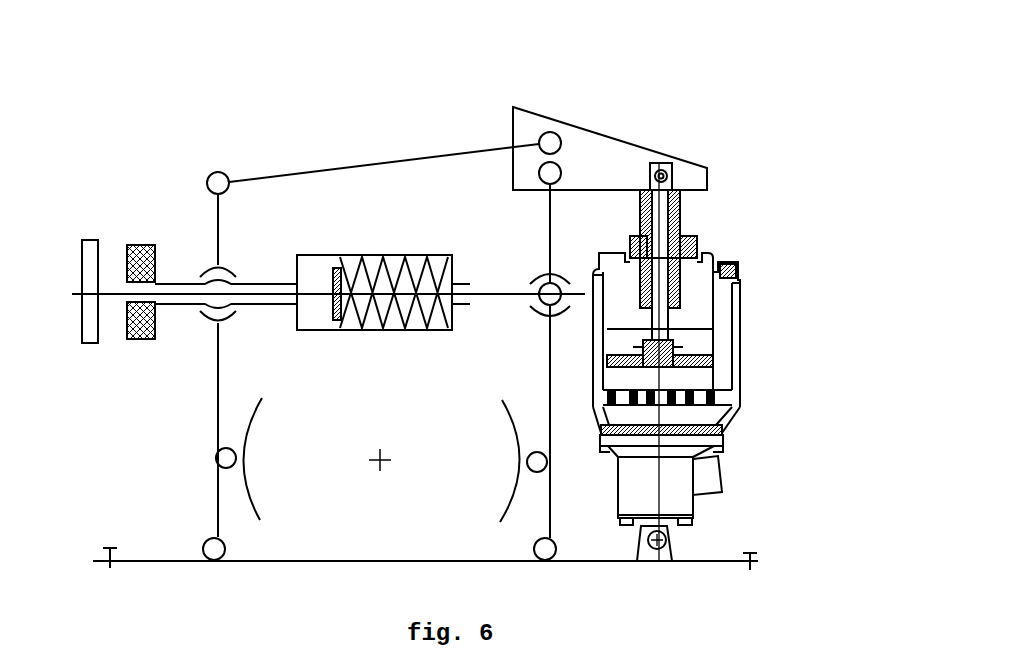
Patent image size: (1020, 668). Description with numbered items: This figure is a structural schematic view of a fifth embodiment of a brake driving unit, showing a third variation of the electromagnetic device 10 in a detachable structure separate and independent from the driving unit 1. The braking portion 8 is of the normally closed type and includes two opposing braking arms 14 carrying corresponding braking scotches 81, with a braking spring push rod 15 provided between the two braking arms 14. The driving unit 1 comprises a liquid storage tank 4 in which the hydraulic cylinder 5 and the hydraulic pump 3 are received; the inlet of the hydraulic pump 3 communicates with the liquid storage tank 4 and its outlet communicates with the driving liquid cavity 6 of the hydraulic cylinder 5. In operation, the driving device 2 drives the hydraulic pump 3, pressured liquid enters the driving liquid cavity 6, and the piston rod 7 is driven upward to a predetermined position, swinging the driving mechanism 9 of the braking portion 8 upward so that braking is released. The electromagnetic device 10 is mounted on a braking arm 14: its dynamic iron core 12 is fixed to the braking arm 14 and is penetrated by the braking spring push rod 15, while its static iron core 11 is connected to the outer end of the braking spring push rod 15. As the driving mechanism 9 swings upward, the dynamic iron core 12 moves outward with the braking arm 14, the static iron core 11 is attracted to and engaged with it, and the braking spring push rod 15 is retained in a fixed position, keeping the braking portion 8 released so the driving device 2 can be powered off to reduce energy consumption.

The driving unit 1 is at (724, 294).
The driving device 2 is at (668, 487).
The hydraulic pump 3 is at (693, 395).
The liquid storage tank 4 is at (740, 297).
The hydraulic cylinder 5 is at (715, 340).
The driving liquid cavity 6 is at (673, 383).
The piston rod 7 is at (668, 243).
The braking portion 8 is at (314, 285).
The driving mechanism 9 is at (585, 160).
The electromagnetic device 10 is at (118, 214).
The static iron core 11 is at (93, 255).
The dynamic iron core 12 is at (143, 248).
The braking arm 14 is at (213, 393).
The braking spring push rod 15 is at (499, 296).
The braking scotch 81 is at (247, 420).